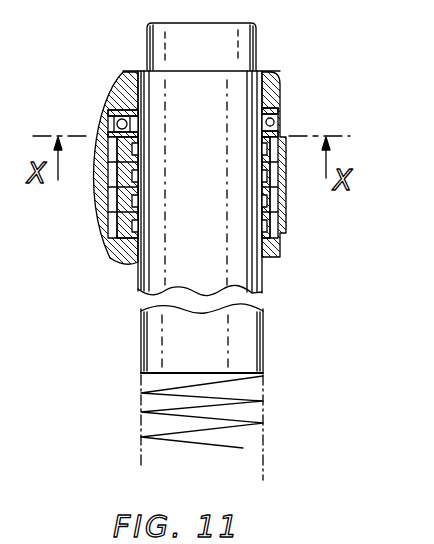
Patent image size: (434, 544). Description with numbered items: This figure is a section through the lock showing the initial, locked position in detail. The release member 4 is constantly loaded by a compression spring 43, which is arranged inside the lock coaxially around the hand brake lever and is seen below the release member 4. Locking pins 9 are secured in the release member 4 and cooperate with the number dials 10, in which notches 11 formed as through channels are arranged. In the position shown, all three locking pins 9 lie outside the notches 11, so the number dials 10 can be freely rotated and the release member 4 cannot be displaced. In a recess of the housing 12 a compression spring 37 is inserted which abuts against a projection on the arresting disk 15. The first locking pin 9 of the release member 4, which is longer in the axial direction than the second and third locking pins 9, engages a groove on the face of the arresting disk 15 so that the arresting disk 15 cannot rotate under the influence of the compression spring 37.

The release member 4 is at (147, 29).
The housing 12 is at (124, 98).
The compression spring 37 is at (107, 127).
The number dials 10 is at (118, 210).
The notches 11 is at (265, 230).
The arresting disk 15 is at (279, 107).
The locking pins 9 is at (279, 128).
The compression spring 43 is at (156, 390).